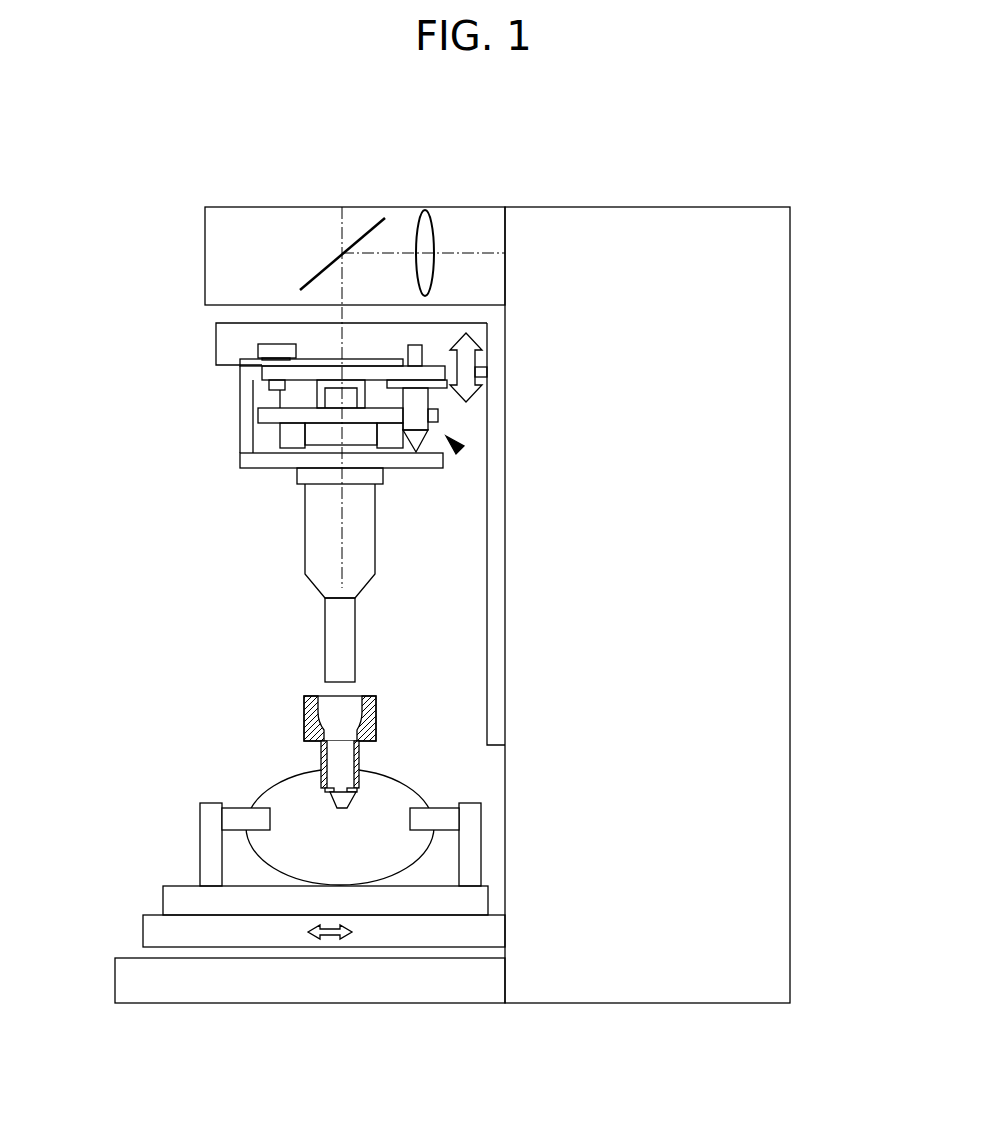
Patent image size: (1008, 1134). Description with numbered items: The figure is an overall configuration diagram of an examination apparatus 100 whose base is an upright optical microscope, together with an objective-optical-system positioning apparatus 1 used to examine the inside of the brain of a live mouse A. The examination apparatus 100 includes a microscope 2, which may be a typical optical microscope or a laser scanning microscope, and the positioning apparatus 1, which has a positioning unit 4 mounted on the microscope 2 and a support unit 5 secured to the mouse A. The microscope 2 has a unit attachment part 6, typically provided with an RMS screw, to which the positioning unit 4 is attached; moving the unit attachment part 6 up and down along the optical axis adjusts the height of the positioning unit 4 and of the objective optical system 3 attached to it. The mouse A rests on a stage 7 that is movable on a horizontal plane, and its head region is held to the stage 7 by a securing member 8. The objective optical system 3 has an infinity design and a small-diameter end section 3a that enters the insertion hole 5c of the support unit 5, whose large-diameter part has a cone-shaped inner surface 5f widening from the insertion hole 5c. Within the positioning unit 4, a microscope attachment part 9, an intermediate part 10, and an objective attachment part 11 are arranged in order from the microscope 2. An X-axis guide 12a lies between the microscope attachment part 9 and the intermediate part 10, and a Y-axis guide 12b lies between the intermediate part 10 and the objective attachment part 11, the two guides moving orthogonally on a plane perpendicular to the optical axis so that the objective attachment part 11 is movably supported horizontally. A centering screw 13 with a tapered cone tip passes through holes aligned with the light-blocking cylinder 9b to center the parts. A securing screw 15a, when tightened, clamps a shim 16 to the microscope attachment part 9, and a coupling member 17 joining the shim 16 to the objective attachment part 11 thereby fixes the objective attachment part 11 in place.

The examination apparatus 100 is at (563, 148).
The objective-optical-system positioning apparatus 1 is at (127, 608).
The microscope 2 is at (792, 436).
The objective optical system 3 is at (315, 550).
The small-diameter end section 3a is at (327, 636).
The positioning unit 4 is at (126, 453).
The support unit 5 is at (304, 720).
The insertion hole 5c is at (343, 756).
The inner surface 5f is at (360, 714).
The unit attachment part 6 is at (216, 352).
The stage 7 is at (143, 929).
The securing member 8 is at (200, 845).
The microscope attachment part 9 is at (262, 372).
The light-blocking cylinder 9b is at (280, 438).
The intermediate part 10 is at (438, 415).
The objective attachment part 11 is at (240, 462).
The X-axis guide 12a is at (280, 396).
The Y-axis guide 12b is at (303, 437).
The centering screw 13 is at (460, 450).
The securing screw 15a is at (277, 344).
The shim 16 is at (248, 362).
The coupling member 17 is at (240, 428).
The mouse A is at (263, 806).